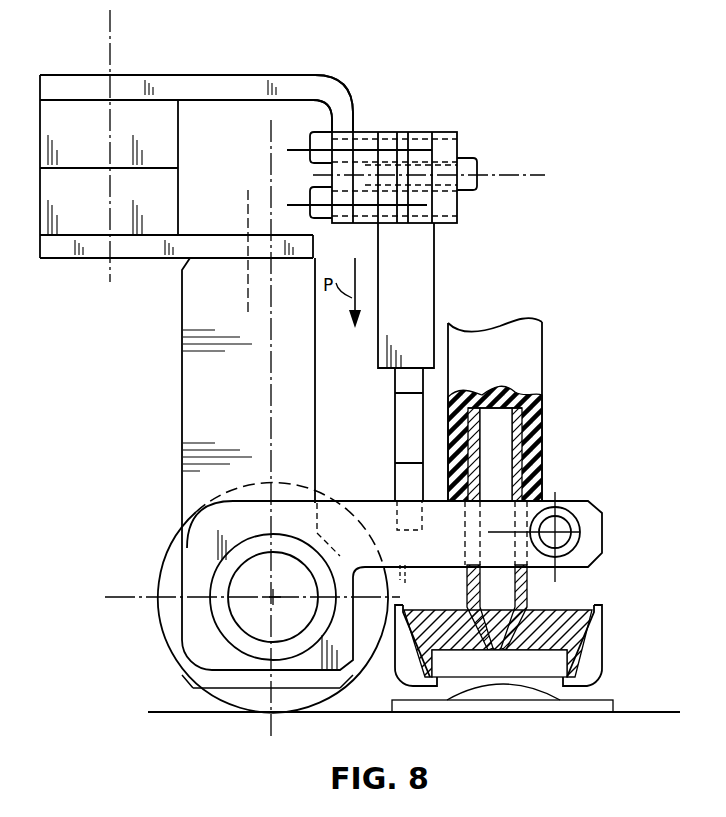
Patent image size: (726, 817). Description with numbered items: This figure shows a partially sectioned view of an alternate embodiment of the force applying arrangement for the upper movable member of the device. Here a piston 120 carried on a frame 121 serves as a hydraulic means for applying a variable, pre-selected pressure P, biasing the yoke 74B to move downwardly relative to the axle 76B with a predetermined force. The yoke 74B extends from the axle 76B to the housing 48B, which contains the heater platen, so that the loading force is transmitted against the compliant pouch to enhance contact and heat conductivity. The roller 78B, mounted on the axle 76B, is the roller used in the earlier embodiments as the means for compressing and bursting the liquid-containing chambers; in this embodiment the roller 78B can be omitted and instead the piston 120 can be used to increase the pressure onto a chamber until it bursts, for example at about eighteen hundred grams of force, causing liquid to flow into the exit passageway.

The frame 121 is at (343, 87).
The piston 120 is at (443, 275).
The yoke 74B is at (577, 502).
The roller 78B is at (178, 540).
The axle 76B is at (243, 613).
The housing 48B is at (603, 647).